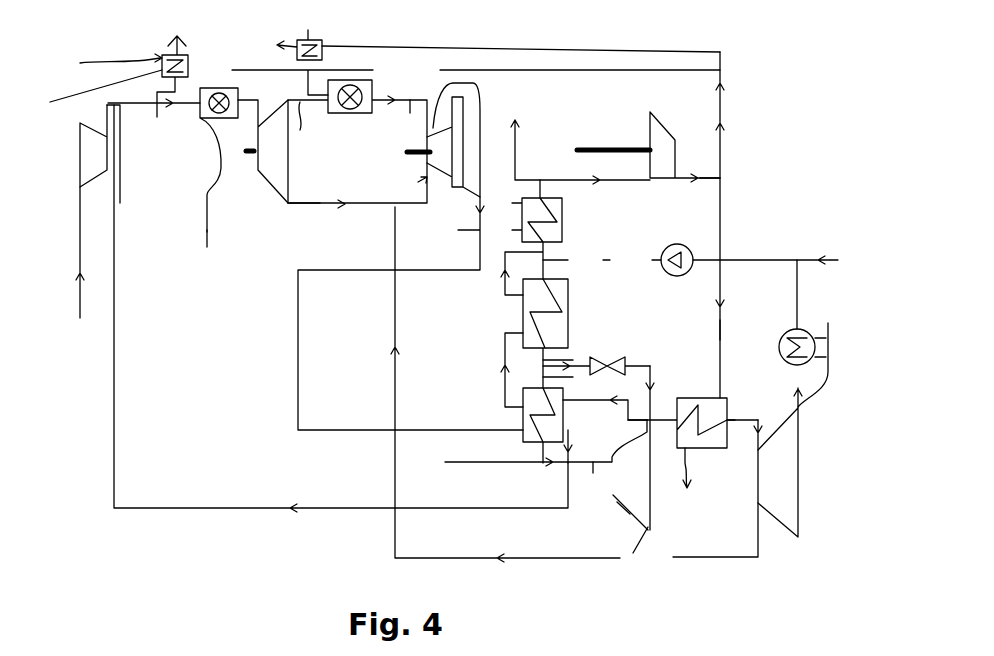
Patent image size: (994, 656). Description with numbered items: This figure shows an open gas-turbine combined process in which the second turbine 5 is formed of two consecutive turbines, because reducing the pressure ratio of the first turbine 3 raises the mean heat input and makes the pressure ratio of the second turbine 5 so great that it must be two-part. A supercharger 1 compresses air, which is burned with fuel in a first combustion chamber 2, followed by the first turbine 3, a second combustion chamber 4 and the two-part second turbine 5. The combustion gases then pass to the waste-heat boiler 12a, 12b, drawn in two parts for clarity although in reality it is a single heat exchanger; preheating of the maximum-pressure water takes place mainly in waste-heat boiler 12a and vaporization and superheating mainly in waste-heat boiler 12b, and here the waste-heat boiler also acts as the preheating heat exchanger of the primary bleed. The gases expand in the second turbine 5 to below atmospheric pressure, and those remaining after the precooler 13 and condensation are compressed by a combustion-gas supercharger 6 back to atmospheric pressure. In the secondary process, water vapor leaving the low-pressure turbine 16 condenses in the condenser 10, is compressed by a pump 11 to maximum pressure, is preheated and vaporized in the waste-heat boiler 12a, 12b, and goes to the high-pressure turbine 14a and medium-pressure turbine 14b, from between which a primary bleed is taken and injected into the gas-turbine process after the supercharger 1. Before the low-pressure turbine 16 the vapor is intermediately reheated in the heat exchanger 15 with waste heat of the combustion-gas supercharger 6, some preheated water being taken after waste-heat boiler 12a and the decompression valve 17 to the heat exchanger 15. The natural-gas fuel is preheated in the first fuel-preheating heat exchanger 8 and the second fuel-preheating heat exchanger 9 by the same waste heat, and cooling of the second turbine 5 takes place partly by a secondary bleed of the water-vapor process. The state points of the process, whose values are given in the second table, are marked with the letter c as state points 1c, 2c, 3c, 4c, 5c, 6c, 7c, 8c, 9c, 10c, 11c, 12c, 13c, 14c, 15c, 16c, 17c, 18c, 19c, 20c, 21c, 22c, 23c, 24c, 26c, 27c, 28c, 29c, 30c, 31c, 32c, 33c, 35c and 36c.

The supercharger 1 is at (80, 143).
The state point 1c is at (79, 310).
The first combustion chamber 2 is at (240, 102).
The state point 2c is at (107, 105).
The first turbine 3 is at (272, 185).
The state point 3c is at (232, 70).
The second combustion chamber 4 is at (363, 114).
The state point 4c is at (304, 129).
The second turbine 5 is at (482, 140).
The state point 5c is at (605, 401).
The combustion-gas supercharger 6 is at (662, 130).
The state point 6c is at (411, 117).
The state point 7c is at (427, 190).
The first fuel-preheating heat exchanger 8 is at (106, 99).
The state point 8c is at (727, 420).
The second fuel-preheating heat exchanger 9 is at (476, 70).
The state point 9c is at (627, 180).
The condenser 10 is at (783, 332).
The state point 10c is at (718, 180).
The pump 11 is at (690, 247).
The state point 11c is at (573, 262).
The waste-heat boiler 12a is at (522, 328).
The waste-heat boiler 12b is at (522, 425).
The state point 12c is at (560, 358).
The precooler 13 is at (562, 202).
The state point 13c is at (529, 448).
The high-pressure turbine 14a is at (617, 502).
The medium-pressure turbine 14b is at (523, 392).
The state point 14c is at (819, 352).
The heat exchanger 15 is at (707, 397).
The state point 15c is at (737, 258).
The low-pressure turbine 16 is at (802, 540).
The state point 16c is at (105, 164).
The decompression valve 17 is at (627, 360).
The state point 17c is at (721, 330).
The state point 18c is at (713, 560).
The state point 19c is at (692, 467).
The state point 20c is at (612, 496).
The state point 21c is at (650, 364).
The state point 22c is at (310, 207).
The state point 23c is at (410, 313).
The state point 24c is at (113, 284).
The state point 26c is at (505, 363).
The state point 27c is at (157, 117).
The state point 28c is at (632, 262).
The state point 29c is at (310, 88).
The state point 30c is at (722, 85).
The state point 31c is at (407, 149).
The state point 32c is at (205, 254).
The state point 33c is at (660, 423).
The state point 35c is at (103, 64).
The state point 36c is at (625, 413).